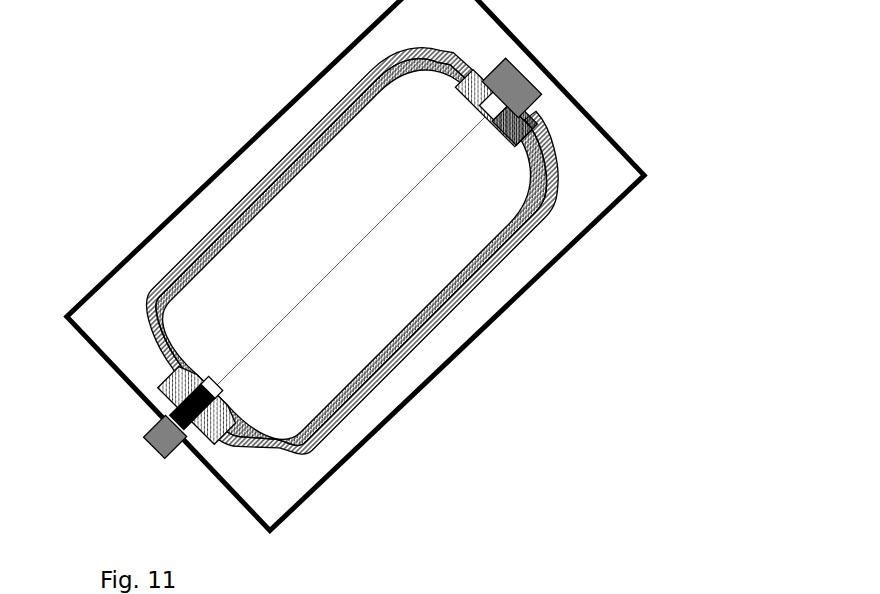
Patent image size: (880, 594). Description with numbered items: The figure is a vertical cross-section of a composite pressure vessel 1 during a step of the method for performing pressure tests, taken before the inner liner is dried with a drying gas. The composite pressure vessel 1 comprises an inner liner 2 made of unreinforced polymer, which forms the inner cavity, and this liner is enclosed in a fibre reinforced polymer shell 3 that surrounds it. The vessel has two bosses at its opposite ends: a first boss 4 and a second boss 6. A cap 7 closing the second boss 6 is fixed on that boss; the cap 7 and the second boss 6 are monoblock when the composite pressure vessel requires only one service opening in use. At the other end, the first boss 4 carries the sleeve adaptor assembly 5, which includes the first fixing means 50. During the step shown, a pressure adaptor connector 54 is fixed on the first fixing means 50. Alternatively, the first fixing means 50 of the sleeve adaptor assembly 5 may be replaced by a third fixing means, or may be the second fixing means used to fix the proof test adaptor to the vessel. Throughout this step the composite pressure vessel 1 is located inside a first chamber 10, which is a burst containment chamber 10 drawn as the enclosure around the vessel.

The composite pressure vessel 1 is at (358, 268).
The inner liner 2 is at (328, 145).
The fibre reinforced polymer shell 3 is at (545, 213).
The first boss 4 is at (197, 430).
The sleeve adaptor assembly 5 is at (143, 423).
The second boss 6 is at (512, 122).
The cap 7 is at (537, 70).
The burst containment chamber 10 is at (325, 57).
The first fixing means 50 is at (172, 410).
The pressure adaptor connector 54 is at (152, 450).